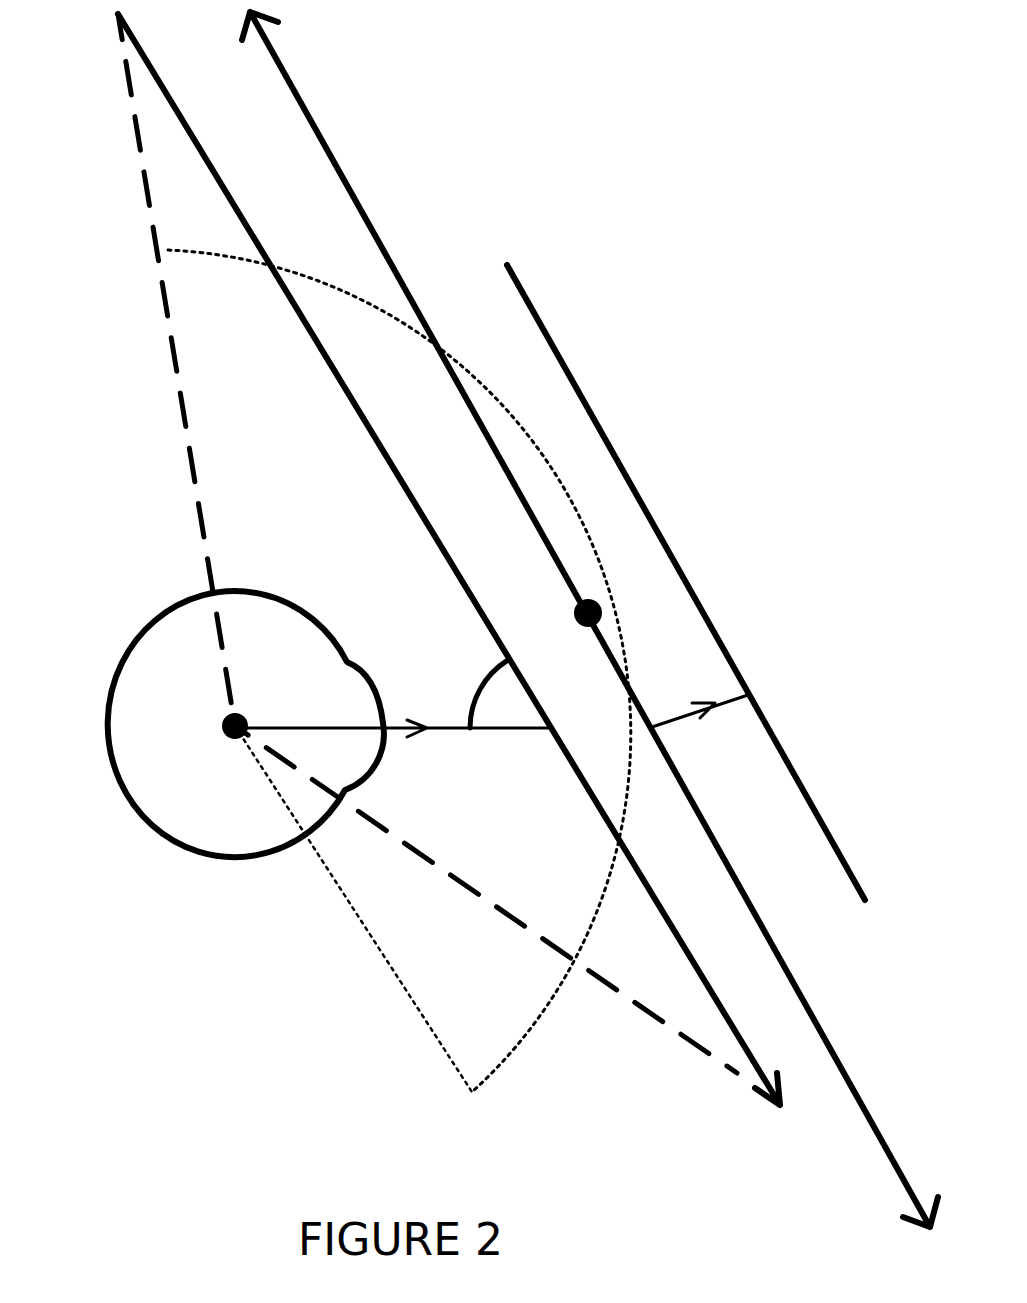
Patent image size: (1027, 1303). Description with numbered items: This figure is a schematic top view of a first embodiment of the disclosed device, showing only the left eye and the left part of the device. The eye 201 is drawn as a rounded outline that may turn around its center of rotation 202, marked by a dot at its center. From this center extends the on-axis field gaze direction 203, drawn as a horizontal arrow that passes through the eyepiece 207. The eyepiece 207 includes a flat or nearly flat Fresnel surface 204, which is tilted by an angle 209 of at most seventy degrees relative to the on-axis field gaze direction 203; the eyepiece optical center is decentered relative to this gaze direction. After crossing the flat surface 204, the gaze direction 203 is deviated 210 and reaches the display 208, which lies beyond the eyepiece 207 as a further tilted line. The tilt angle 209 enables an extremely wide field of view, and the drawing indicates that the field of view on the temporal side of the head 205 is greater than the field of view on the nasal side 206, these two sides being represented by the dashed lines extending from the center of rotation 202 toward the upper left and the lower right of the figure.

The eye 201 is at (212, 877).
The center of rotation 202 is at (235, 742).
The on-axis field gaze direction 203 is at (533, 732).
The Fresnel surface 204 is at (305, 333).
The temporal side of the head 205 is at (183, 413).
The nasal side 206 is at (712, 1057).
The eyepiece 207 is at (412, 297).
The display 208 is at (547, 330).
The tilt angle 209 is at (480, 693).
The deviation 210 is at (710, 707).